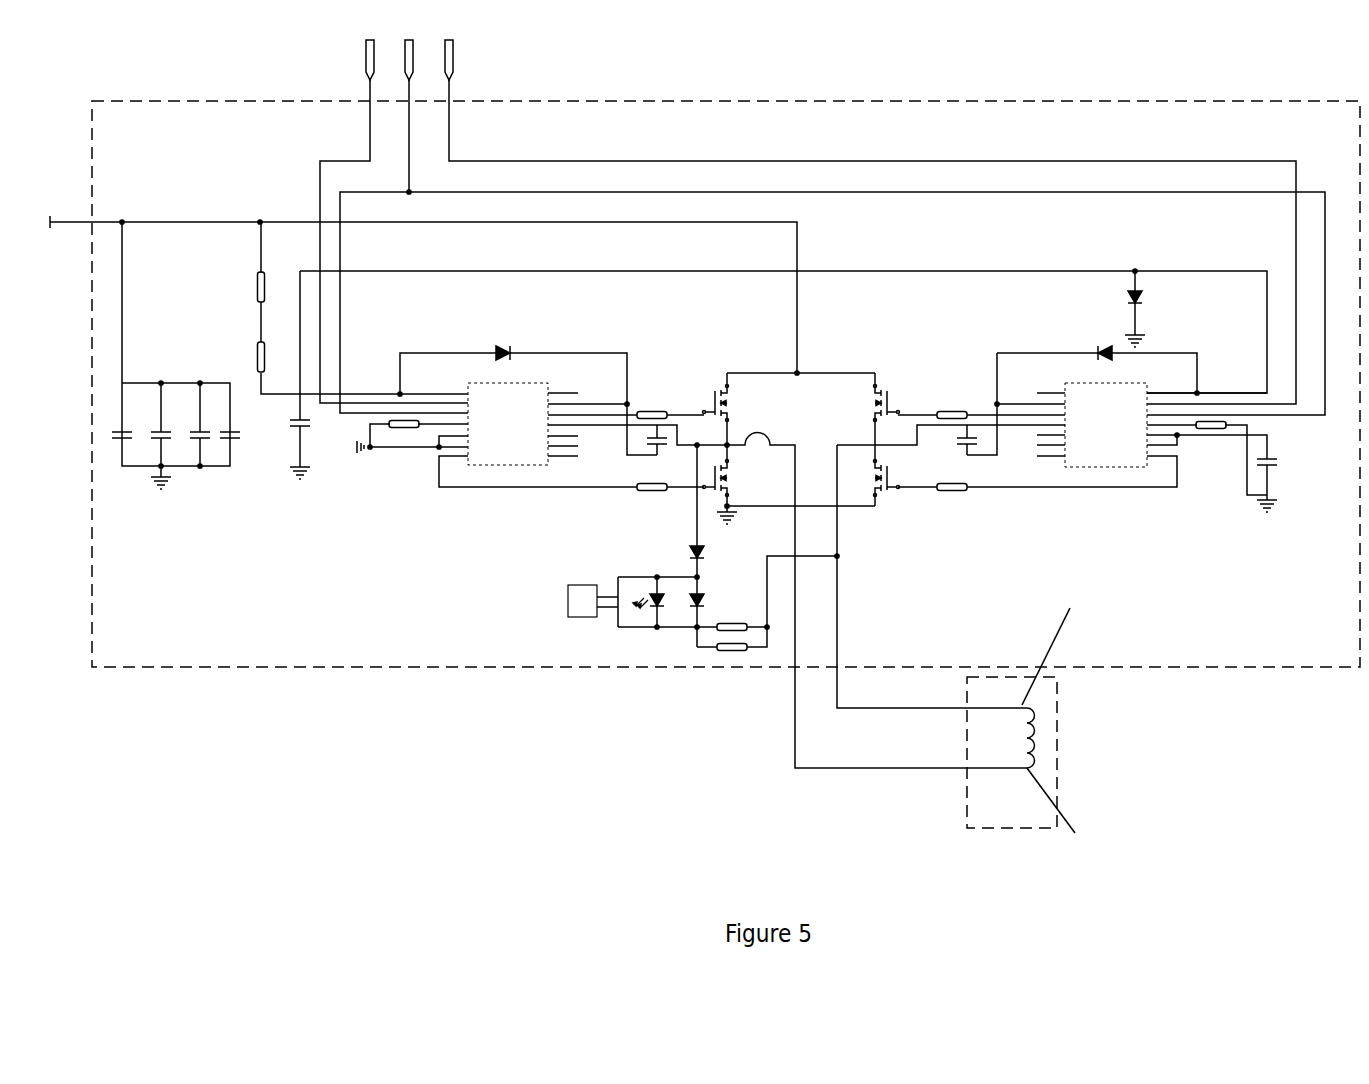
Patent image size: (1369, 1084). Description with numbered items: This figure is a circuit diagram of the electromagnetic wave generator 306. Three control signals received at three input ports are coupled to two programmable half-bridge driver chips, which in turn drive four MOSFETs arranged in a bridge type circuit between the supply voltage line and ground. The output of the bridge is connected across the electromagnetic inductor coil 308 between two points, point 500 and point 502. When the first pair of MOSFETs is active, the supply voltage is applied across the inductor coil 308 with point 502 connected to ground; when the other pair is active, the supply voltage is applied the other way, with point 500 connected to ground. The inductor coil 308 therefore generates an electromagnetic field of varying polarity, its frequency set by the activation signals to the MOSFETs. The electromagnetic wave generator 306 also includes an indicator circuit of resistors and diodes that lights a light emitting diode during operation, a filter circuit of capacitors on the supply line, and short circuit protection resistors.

The electromagnetic wave generator 306 is at (232, 575).
The electromagnetic inductor coil 308 is at (1045, 687).
The point 500 is at (1081, 650).
The point 502 is at (1076, 827).